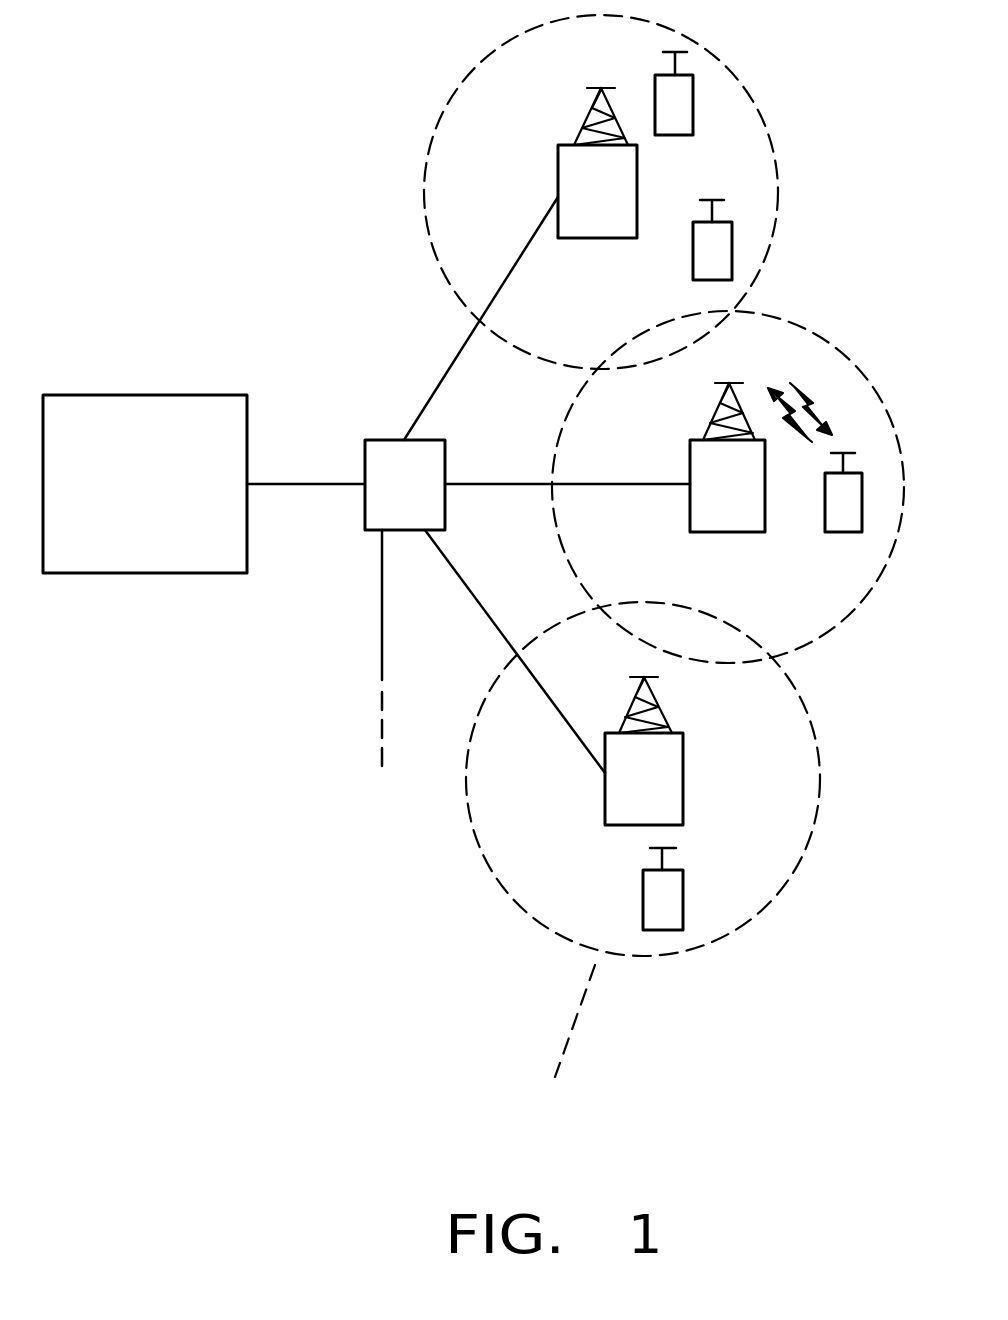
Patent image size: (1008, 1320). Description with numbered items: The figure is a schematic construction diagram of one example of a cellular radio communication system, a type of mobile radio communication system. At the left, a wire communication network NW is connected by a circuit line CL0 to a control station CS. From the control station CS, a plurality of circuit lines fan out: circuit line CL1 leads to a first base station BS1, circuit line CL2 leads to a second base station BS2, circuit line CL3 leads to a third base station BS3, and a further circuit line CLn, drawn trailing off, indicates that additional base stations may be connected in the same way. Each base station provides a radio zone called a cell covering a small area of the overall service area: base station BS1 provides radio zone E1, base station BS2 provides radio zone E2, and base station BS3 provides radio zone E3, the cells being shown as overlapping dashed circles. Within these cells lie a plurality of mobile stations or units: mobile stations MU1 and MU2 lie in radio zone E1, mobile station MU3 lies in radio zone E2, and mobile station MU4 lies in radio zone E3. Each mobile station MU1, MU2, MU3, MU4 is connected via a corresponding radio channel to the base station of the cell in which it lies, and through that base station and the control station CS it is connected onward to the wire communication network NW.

The wire communication network NW is at (190, 395).
The control station CS is at (377, 440).
The circuit line CL0 is at (300, 484).
The circuit line CL1 is at (450, 363).
The circuit line CL2 is at (488, 484).
The circuit line CL3 is at (477, 605).
The circuit line CLn is at (381, 612).
The base station BS1 is at (558, 175).
The base station BS2 is at (690, 463).
The base station BS3 is at (683, 785).
The mobile station MU1 is at (677, 135).
The mobile station MU2 is at (693, 268).
The mobile station MU3 is at (833, 532).
The mobile station MU4 is at (643, 890).
The radio zone E1 is at (725, 63).
The radio zone E2 is at (833, 343).
The radio zone E3 is at (816, 750).